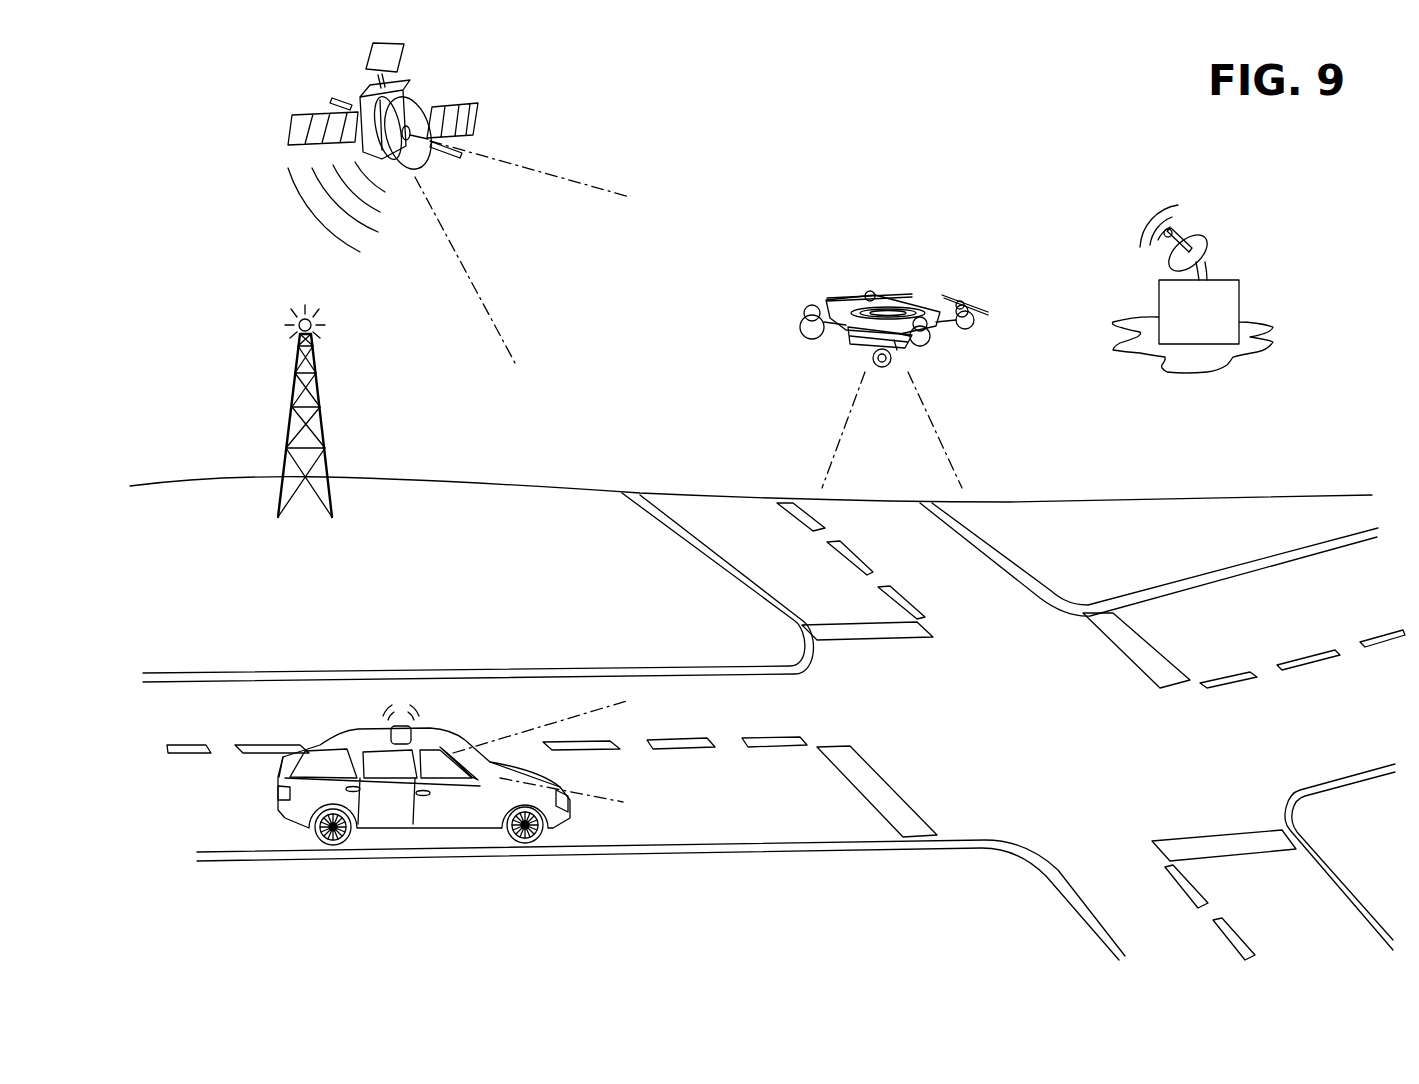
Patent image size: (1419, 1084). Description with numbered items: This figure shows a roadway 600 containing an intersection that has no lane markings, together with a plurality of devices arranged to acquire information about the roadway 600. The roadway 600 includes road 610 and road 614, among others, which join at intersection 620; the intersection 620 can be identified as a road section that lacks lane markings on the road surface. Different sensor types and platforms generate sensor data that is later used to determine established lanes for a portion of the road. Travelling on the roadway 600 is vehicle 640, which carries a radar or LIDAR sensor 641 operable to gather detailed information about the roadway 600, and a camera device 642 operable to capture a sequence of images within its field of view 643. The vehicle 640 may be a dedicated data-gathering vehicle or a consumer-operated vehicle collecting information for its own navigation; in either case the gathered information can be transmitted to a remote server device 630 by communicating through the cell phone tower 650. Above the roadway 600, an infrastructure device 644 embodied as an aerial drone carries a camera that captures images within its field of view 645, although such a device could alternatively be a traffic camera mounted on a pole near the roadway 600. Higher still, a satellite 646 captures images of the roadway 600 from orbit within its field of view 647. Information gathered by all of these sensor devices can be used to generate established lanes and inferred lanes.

The roadway 600 is at (783, 810).
The road 610 is at (612, 827).
The road 614 is at (1277, 597).
The intersection 620 is at (1032, 642).
The remote server device 630 is at (1243, 307).
The vehicle 640 is at (425, 807).
The radar or LIDAR sensor 641 is at (400, 726).
The camera device 642 is at (428, 748).
The field of view 643 is at (533, 723).
The infrastructure device 644 is at (917, 296).
The field of view 645 is at (932, 412).
The satellite 646 is at (473, 118).
The field of view 647 is at (563, 170).
The cell phone tower 650 is at (295, 383).